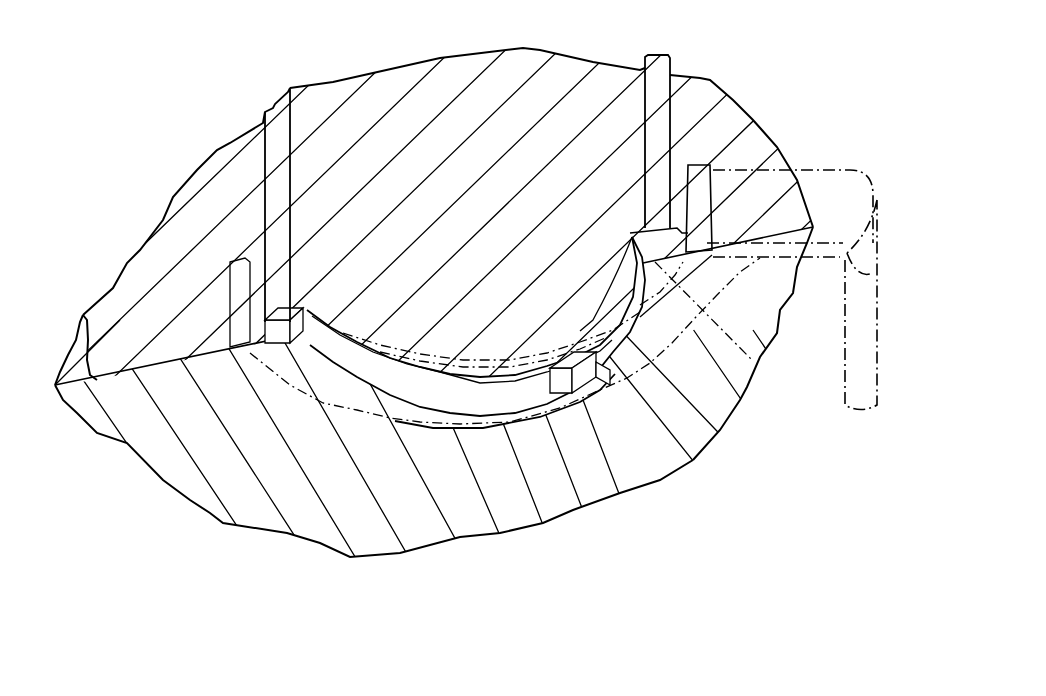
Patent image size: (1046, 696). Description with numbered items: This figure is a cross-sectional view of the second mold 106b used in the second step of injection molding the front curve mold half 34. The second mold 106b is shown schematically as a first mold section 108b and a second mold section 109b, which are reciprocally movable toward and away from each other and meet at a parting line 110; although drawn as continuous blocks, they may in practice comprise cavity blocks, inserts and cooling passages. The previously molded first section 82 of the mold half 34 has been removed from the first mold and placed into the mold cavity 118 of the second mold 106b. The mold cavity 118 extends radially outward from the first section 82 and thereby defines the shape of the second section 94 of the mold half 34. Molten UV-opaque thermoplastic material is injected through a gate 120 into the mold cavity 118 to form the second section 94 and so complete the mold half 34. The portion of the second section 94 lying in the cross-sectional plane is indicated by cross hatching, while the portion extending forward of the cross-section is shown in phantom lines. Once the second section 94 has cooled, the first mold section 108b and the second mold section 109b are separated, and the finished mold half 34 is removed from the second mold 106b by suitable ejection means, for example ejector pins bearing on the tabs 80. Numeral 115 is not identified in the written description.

The second mold 106b is at (162, 127).
The first mold section 108b is at (333, 82).
The post 115 is at (265, 163).
The mold cavity 118 is at (232, 302).
The parting line 110 is at (83, 315).
The second mold section 109b is at (130, 445).
The first section 82 is at (623, 283).
The tabs 80 is at (808, 168).
The gate 120 is at (867, 188).
The front curve mold half 34 is at (820, 258).
The second section 94 is at (762, 370).